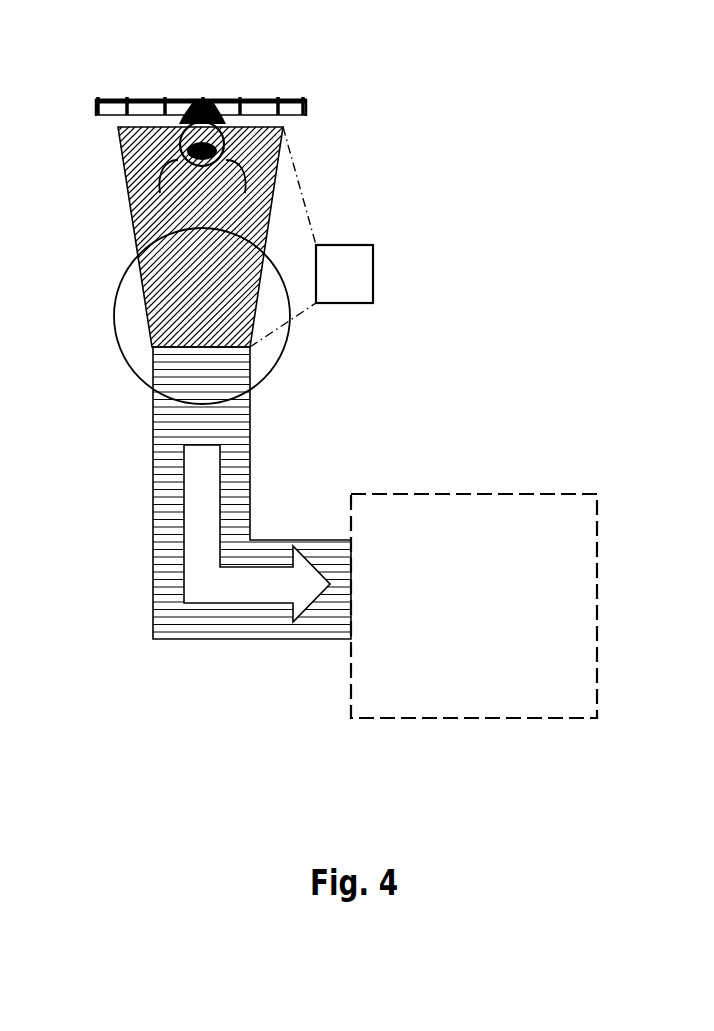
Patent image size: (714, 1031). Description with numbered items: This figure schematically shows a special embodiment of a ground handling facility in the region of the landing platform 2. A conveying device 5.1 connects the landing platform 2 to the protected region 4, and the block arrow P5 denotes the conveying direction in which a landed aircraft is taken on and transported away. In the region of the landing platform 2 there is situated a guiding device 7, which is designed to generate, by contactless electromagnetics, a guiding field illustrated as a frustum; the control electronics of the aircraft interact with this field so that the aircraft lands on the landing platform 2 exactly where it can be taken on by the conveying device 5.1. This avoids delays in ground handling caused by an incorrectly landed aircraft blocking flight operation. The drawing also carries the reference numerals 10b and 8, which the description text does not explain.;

The suspension rail of overhead conveyor 10b is at (205, 100).
The receiving hopper 8 is at (270, 198).
The guiding device 7 is at (373, 270).
The landing platform 2 is at (117, 350).
The protected region 4 is at (558, 494).
The conveying device 5.1 is at (210, 640).
The block arrow P5 is at (270, 590).